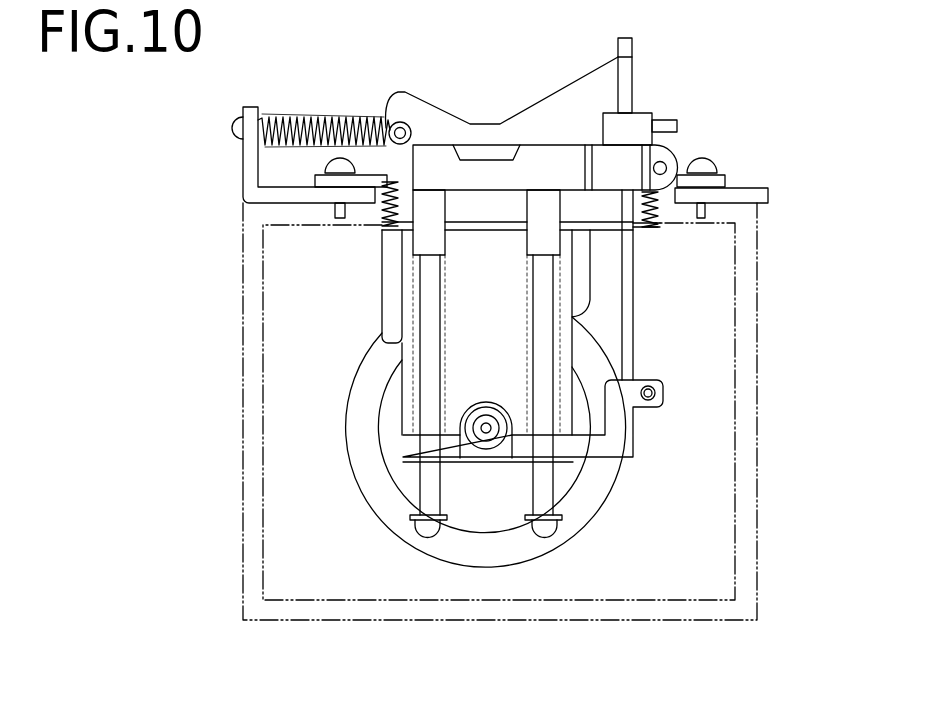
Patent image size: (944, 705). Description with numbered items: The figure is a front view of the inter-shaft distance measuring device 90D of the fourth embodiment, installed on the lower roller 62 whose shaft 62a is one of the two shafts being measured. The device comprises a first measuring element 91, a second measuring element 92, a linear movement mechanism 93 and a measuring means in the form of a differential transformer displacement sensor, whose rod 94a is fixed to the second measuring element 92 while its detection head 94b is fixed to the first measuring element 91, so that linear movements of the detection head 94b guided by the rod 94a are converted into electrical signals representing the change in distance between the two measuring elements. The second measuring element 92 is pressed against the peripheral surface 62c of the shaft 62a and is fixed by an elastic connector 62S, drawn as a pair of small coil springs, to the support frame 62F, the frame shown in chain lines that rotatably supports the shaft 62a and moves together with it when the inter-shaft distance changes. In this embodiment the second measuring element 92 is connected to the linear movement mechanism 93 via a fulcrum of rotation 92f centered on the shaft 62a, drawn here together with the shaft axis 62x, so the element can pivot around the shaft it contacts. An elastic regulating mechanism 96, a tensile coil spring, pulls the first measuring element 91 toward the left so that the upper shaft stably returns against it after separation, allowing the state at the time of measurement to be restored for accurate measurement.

The inter-shaft distance measuring device 90D is at (740, 94).
The first measuring element 91 is at (547, 118).
The second measuring element 92 is at (395, 283).
The fulcrum of rotation 92f is at (447, 534).
The wheel shaft 62x is at (486, 428).
The linear movement mechanism 93 is at (435, 383).
The rod 94a is at (628, 73).
The detection head 94b is at (637, 118).
The elastic regulating mechanism 96 is at (315, 117).
The lower roller 62 is at (617, 498).
The shaft 62a is at (515, 517).
The peripheral surface 62c is at (390, 477).
The elastic connector 62S is at (382, 214).
The support frame 62F is at (303, 620).